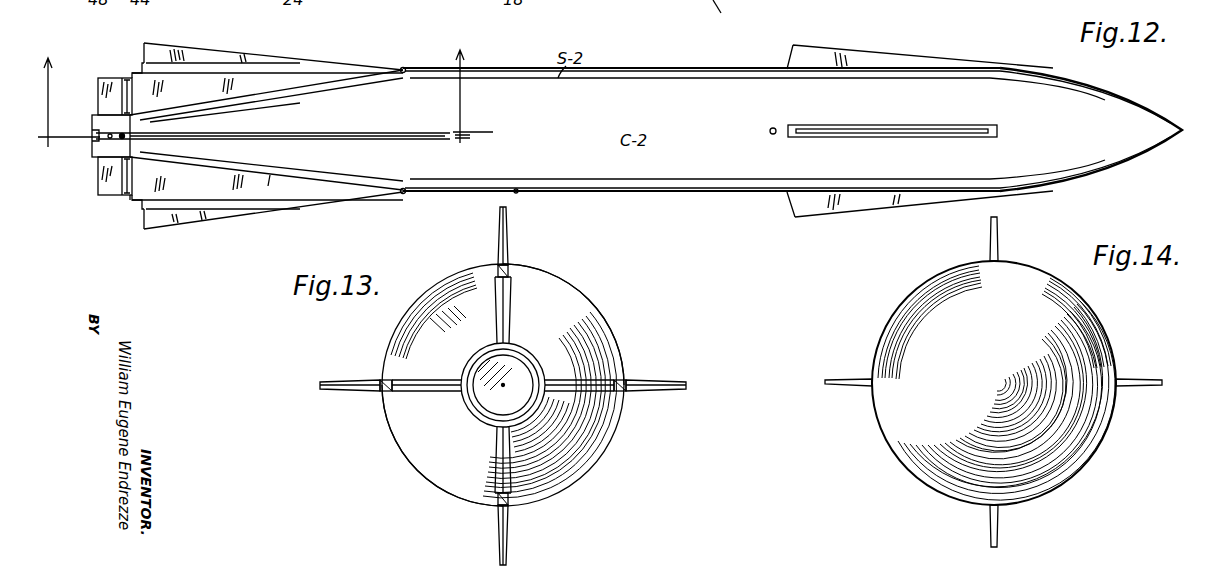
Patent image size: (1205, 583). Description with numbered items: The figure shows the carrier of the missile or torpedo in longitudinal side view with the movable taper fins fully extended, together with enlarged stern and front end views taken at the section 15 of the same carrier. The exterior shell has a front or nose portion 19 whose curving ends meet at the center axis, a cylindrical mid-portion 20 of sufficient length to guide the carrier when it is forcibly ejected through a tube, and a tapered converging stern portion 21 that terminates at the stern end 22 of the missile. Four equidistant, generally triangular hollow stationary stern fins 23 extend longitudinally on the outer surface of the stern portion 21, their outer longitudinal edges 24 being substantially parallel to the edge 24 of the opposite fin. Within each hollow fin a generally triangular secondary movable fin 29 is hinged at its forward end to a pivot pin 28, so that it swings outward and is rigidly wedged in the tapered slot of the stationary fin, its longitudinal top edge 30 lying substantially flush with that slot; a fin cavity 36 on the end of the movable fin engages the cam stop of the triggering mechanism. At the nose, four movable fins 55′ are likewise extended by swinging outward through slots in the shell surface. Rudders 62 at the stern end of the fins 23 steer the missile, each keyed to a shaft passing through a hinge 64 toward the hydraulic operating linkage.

In FIG. 12, the section line 15 is at (255, 98).
In FIG. 12, the nose portion 19 is at (1059, 129).
In FIG. 14, the nose portion 19 is at (994, 383).
In FIG. 12, the cylindrical mid-portion 20 is at (701, 129).
In FIG. 12, the stern portion 21 is at (297, 130).
In FIG. 13, the stern portion 21 is at (503, 385).
In FIG. 13, the stern end 22 is at (482, 418).
In FIG. 12, the stationary stern fins 23 is at (267, 136).
In FIG. 13, the stationary stern fins 23 is at (512, 322).
In FIG. 12, the outer longitudinal edges 24 is at (274, 69).
In FIG. 12, the pivot pin 28 is at (408, 71).
In FIG. 12, the secondary movable fin 29 is at (158, 51).
In FIG. 13, the secondary movable fin 29 is at (347, 392).
In FIG. 12, the longitudinal top edge 30 is at (207, 50).
In FIG. 12, the fin cavity 36 is at (143, 62).
In FIG. 12, the movable fins 55′ is at (813, 52).
In FIG. 14, the movable fins 55′ is at (1000, 230).
In FIG. 12, the rudders 62 is at (108, 98).
In FIG. 13, the rudders 62 is at (500, 297).
In FIG. 12, the hinge 64 is at (130, 197).